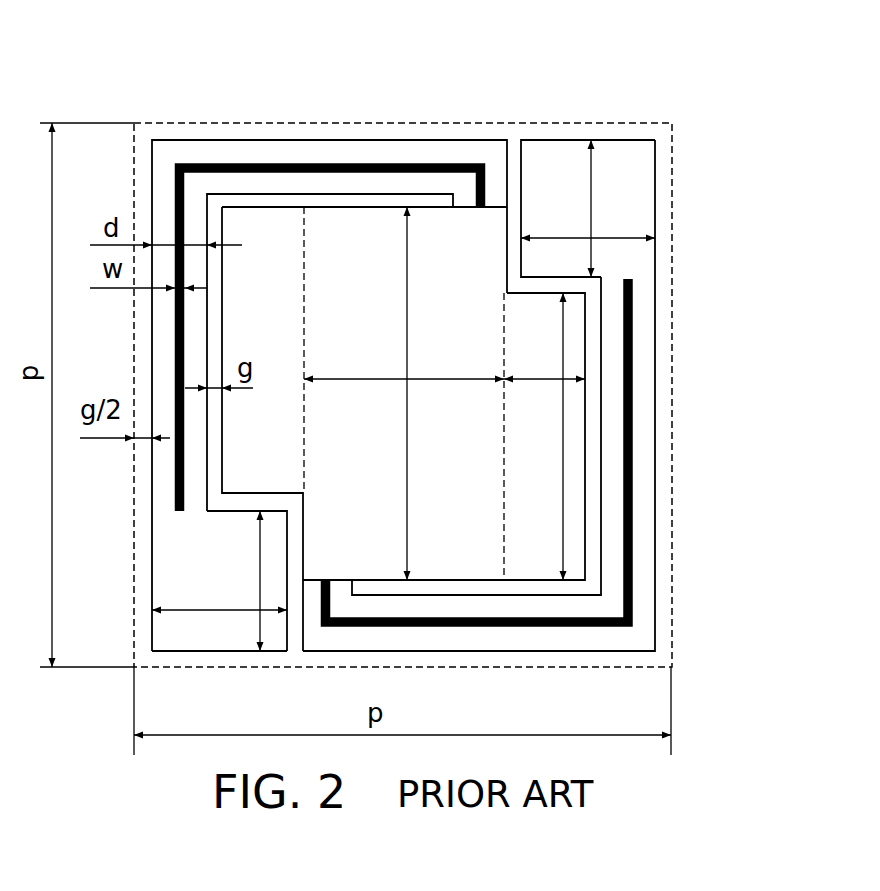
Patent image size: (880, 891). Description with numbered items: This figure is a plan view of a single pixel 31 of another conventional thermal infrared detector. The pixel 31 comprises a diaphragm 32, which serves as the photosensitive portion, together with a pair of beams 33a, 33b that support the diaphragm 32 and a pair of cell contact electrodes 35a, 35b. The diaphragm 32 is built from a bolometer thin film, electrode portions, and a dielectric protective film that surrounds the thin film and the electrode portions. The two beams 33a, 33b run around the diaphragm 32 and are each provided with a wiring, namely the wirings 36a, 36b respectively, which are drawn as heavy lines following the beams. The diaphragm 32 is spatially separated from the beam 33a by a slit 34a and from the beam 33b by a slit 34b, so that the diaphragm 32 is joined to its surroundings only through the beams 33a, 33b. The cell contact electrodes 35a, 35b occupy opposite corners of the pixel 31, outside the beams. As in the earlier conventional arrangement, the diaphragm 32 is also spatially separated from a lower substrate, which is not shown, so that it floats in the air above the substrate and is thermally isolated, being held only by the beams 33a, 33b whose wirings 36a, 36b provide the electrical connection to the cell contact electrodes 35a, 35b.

The pixel 31 is at (279, 657).
The diaphragm 32 is at (483, 562).
The beam 33a is at (258, 148).
The beam 33b is at (643, 487).
The slit 34a is at (373, 200).
The slit 34b is at (592, 405).
The cell contact electrode 35a is at (207, 633).
The cell contact electrode 35b is at (628, 157).
The wiring 36a is at (335, 163).
The wiring 36b is at (632, 310).